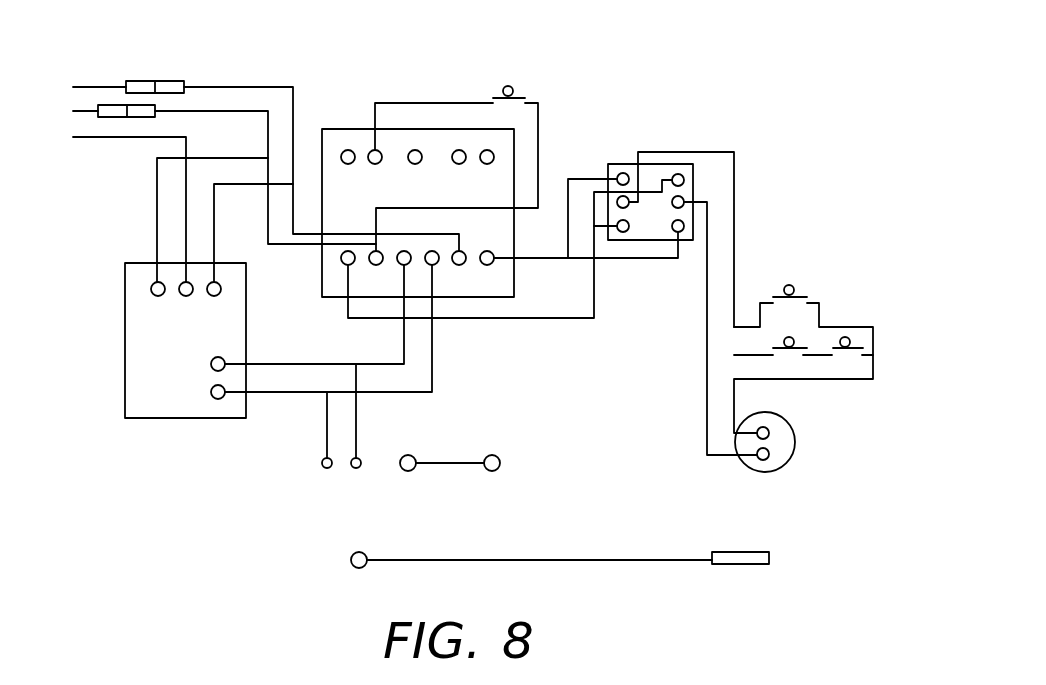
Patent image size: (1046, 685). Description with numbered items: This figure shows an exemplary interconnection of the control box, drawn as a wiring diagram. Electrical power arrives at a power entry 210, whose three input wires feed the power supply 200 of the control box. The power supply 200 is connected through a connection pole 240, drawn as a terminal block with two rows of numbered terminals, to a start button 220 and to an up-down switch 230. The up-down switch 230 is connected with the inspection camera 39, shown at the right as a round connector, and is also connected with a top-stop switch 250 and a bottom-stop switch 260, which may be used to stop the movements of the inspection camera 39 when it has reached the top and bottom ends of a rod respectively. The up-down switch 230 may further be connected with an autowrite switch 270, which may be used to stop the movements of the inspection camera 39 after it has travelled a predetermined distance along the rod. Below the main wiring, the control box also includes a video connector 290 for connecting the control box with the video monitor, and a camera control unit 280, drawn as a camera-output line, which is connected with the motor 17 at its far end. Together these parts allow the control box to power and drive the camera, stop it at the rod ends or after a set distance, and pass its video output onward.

The power entry 210 is at (43, 110).
The power supply 200 is at (185, 339).
The connection pole 240 is at (342, 202).
The start button 220 is at (510, 86).
The up-down switch 230 is at (653, 205).
The autowrite switch 270 is at (790, 285).
The top-stop switch 250 is at (789, 348).
The bottom-stop switch 260 is at (845, 348).
The inspection camera 39 is at (763, 472).
The video connector 290 is at (457, 463).
The camera control unit 280 is at (367, 538).
The motor 17 is at (742, 564).